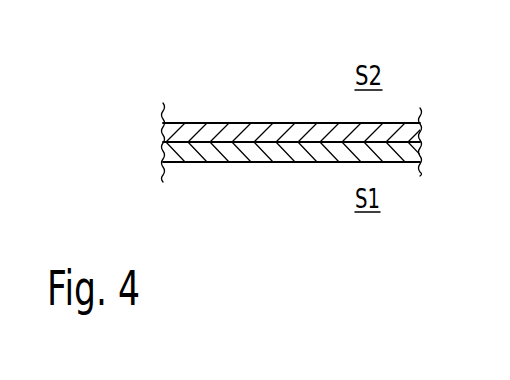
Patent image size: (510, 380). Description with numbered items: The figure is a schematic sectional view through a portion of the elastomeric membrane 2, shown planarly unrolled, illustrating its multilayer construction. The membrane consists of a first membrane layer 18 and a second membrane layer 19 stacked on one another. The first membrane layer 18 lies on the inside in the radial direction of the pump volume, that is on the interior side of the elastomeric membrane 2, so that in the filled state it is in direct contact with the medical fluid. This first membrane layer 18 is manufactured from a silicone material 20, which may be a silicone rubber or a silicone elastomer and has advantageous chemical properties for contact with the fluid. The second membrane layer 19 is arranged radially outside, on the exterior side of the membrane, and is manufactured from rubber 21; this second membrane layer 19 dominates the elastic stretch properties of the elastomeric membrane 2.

The elastomeric membrane 2 is at (285, 127).
The first membrane layer 18 is at (277, 153).
The second membrane layer 19 is at (293, 127).
The silicone material 20 is at (217, 155).
The rubber 21 is at (253, 123).